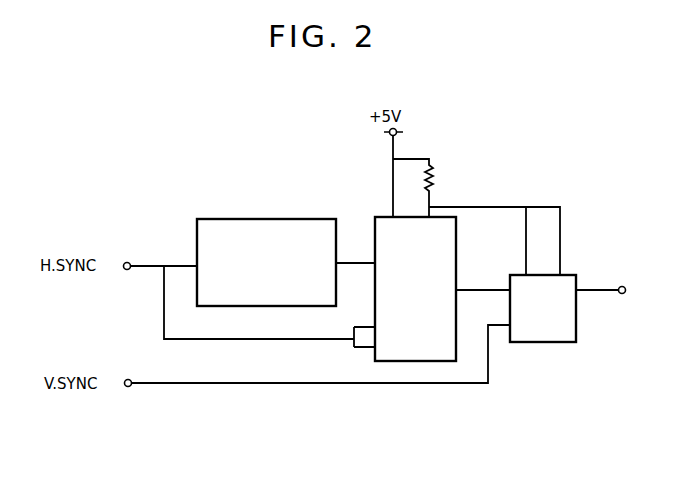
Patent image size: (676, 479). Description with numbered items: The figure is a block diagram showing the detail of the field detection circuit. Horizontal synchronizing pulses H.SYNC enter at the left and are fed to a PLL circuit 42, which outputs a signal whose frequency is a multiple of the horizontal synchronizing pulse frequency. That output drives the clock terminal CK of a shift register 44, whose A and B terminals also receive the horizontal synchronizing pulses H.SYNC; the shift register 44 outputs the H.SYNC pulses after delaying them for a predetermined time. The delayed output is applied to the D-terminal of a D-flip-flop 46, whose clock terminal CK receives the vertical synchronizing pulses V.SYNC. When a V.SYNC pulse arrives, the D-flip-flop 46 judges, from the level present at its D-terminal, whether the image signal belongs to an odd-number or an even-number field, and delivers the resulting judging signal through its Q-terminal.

The PLL circuit 42 is at (242, 219).
The shift register 44 is at (390, 363).
The D-flip-flop 46 is at (538, 342).